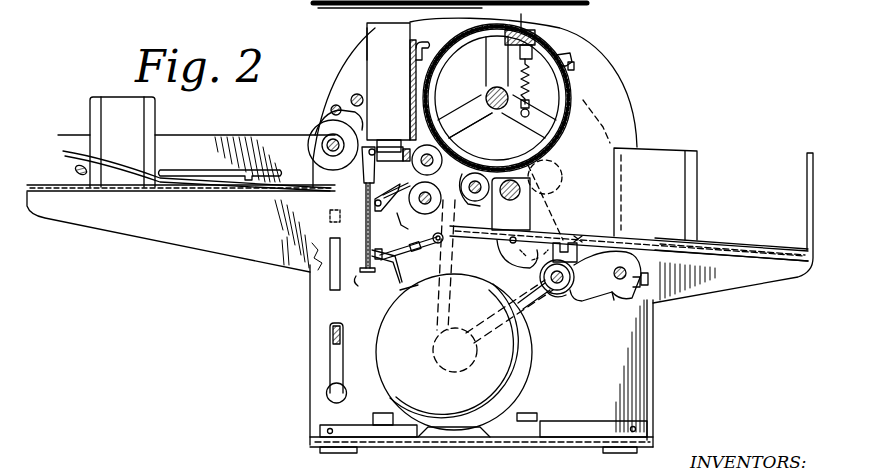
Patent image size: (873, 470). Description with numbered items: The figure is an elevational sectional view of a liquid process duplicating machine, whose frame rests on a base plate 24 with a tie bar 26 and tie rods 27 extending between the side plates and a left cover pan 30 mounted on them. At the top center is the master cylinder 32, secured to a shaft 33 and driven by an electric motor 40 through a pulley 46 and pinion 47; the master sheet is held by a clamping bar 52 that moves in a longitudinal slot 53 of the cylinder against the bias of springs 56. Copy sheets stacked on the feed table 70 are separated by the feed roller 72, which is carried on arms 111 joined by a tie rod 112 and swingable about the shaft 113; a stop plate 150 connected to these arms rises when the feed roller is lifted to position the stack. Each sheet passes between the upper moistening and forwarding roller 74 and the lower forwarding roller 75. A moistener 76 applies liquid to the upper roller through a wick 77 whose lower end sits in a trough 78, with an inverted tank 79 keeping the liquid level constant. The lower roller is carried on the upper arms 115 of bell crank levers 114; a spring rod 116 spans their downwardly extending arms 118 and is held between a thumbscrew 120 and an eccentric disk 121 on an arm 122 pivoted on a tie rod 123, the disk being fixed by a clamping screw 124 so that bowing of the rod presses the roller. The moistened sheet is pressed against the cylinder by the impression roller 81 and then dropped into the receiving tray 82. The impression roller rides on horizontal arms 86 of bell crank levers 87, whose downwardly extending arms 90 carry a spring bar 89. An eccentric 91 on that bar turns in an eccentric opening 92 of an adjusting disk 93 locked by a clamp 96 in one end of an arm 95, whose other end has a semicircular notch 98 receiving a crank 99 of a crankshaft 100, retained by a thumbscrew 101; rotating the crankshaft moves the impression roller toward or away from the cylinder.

The base plate 24 is at (437, 442).
The tie bar 26 is at (575, 60).
The tie rod 27 is at (350, 98).
The left cover pan 30 is at (310, 343).
The master cylinder 32 is at (571, 91).
The shaft 33 is at (488, 96).
The electric motor 40 is at (531, 376).
The pulley 46 is at (618, 128).
The pinion 47 is at (560, 165).
The clamping bar 52 is at (530, 40).
The longitudinal slot 53 is at (519, 15).
The springs 56 is at (531, 87).
The feed table 70 is at (50, 170).
The feed roller 72 is at (318, 134).
The upper moistening and forwarding roller 74 is at (480, 122).
The lower forwarding roller 75 is at (432, 210).
The moistener 76 is at (365, 28).
The wick 77 is at (396, 186).
The trough 78 is at (392, 161).
The tank 79 is at (382, 36).
The impression roller 81 is at (478, 202).
The receiving tray 82 is at (737, 250).
The horizontal arms 86 is at (493, 229).
The bell crank levers 87 is at (548, 211).
The spring bar 89 is at (527, 291).
The downwardly extending arms 90 is at (520, 258).
The eccentric 91 is at (574, 277).
The eccentric opening 92 is at (568, 257).
The adjusting disk 93 is at (568, 294).
The arm 95 is at (582, 288).
The clamp 96 is at (577, 239).
The semicircular notch 98 is at (627, 270).
The crank 99 is at (636, 283).
The crankshaft 100 is at (624, 294).
The thumbscrew 101 is at (649, 278).
The arms 111 is at (328, 116).
The tie rod 112 is at (330, 108).
The shaft 113 is at (433, 164).
The bell crank levers 114 is at (415, 226).
The upper arms 115 is at (374, 204).
The spring rod 116 is at (388, 273).
The downwardly extending arms 118 is at (383, 237).
The thumbscrew 120 is at (373, 278).
The eccentric disk 121 is at (416, 290).
The arm 122 is at (411, 256).
The tie rod 123 is at (414, 244).
The clamping screw 124 is at (433, 239).
The stop plate 150 is at (364, 288).